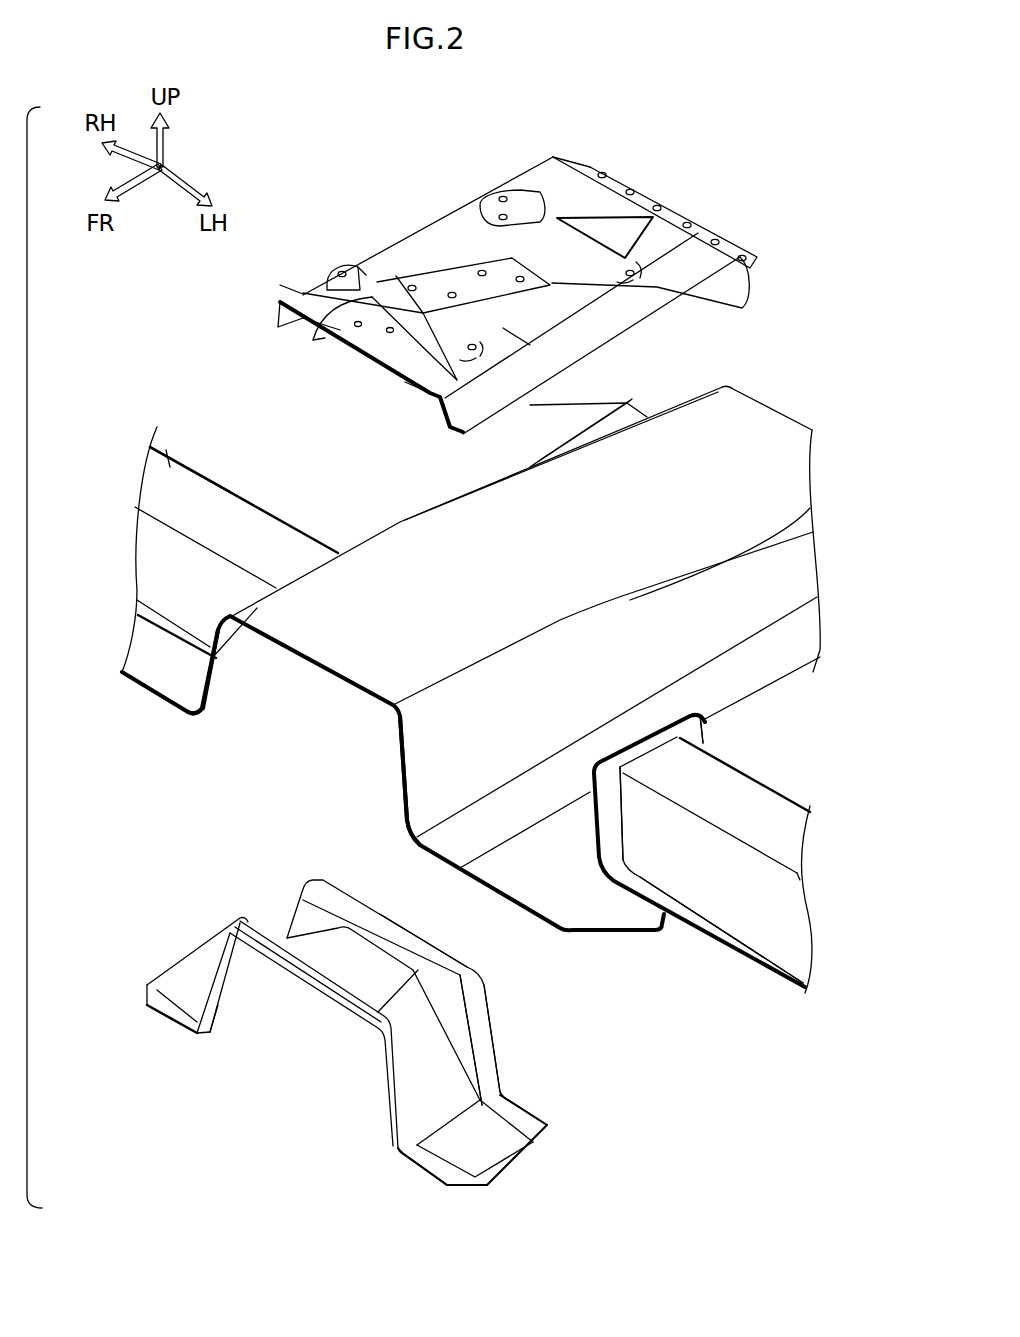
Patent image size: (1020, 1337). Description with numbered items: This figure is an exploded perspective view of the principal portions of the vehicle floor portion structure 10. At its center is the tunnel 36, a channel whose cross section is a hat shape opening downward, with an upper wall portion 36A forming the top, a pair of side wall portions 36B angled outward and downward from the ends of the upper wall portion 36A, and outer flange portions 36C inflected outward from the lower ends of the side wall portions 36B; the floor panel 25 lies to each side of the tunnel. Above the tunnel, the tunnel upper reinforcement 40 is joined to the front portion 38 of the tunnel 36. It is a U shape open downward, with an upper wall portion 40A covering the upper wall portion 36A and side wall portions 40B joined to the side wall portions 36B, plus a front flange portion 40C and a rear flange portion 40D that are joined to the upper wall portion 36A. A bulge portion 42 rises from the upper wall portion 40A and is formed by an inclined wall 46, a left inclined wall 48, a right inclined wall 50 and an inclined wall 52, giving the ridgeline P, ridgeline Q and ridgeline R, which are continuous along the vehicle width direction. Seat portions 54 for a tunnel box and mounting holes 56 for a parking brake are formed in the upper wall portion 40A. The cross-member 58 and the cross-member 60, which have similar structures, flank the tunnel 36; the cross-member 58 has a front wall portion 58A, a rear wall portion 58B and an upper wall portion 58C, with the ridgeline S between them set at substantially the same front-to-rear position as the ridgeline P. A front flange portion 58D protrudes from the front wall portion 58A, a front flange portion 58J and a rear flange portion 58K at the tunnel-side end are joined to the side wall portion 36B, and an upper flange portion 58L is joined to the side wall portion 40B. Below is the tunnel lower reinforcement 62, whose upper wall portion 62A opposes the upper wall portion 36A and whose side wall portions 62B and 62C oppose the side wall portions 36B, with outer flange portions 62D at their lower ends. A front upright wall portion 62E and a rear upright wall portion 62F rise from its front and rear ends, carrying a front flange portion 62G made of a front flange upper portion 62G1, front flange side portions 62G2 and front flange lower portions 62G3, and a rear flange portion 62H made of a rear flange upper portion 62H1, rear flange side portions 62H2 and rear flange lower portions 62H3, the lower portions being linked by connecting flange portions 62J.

The vehicle lower structure 10 is at (817, 160).
The floor panel 25 is at (150, 663).
The tunnel 36 is at (792, 412).
The upper wall portion 36A is at (367, 560).
The side wall portions 36B is at (227, 682).
The outer flange portions 36C is at (188, 690).
The front portion 38 is at (422, 537).
The tunnel upper reinforcement 40 is at (499, 163).
The upper wall portion 40A is at (466, 212).
The side wall portions 40B is at (433, 218).
The front flange portion 40C is at (298, 324).
The rear flange portion 40D is at (647, 200).
The bulge portion 42 is at (398, 276).
The inclined wall 46 is at (390, 345).
The left inclined wall 48 is at (503, 328).
The right inclined wall 50 is at (366, 275).
The inclined wall 52 is at (467, 283).
The seat portions 54 is at (521, 204).
The mounting holes 56 is at (452, 292).
The cross-member 58 is at (787, 792).
The front wall portion 58A is at (160, 560).
The rear wall portion 58B is at (247, 497).
The upper wall portion 58C is at (170, 463).
The front flange portion 58D is at (770, 955).
The front flange portion 58J is at (610, 830).
The rear flange portion 58K is at (697, 737).
The upper flange portion 58L is at (643, 748).
The cross-member 60 is at (212, 478).
The tunnel lower reinforcement 62 is at (245, 1125).
The upper wall portion 62A is at (363, 950).
The side wall portion 62B is at (445, 1027).
The side wall portion 62C is at (212, 985).
The outer flange portions 62D is at (195, 978).
The front upright wall portion 62E is at (365, 1043).
The rear upright wall portion 62F is at (452, 998).
The front flange portion 62G is at (318, 970).
The front flange upper portion 62G1 is at (297, 977).
The front flange side portions 62G2 is at (182, 1028).
The front flange lower portions 62G3 is at (163, 1010).
The rear flange portion 62H is at (357, 904).
The rear flange upper portion 62H1 is at (440, 955).
The rear flange side portions 62H2 is at (487, 1055).
The rear flange lower portions 62H3 is at (525, 1112).
The connecting flange portions 62J is at (170, 980).
The ridgeline P is at (405, 382).
The ridgeline Q is at (325, 338).
The ridgeline R is at (280, 285).
The ridgeline S is at (670, 803).